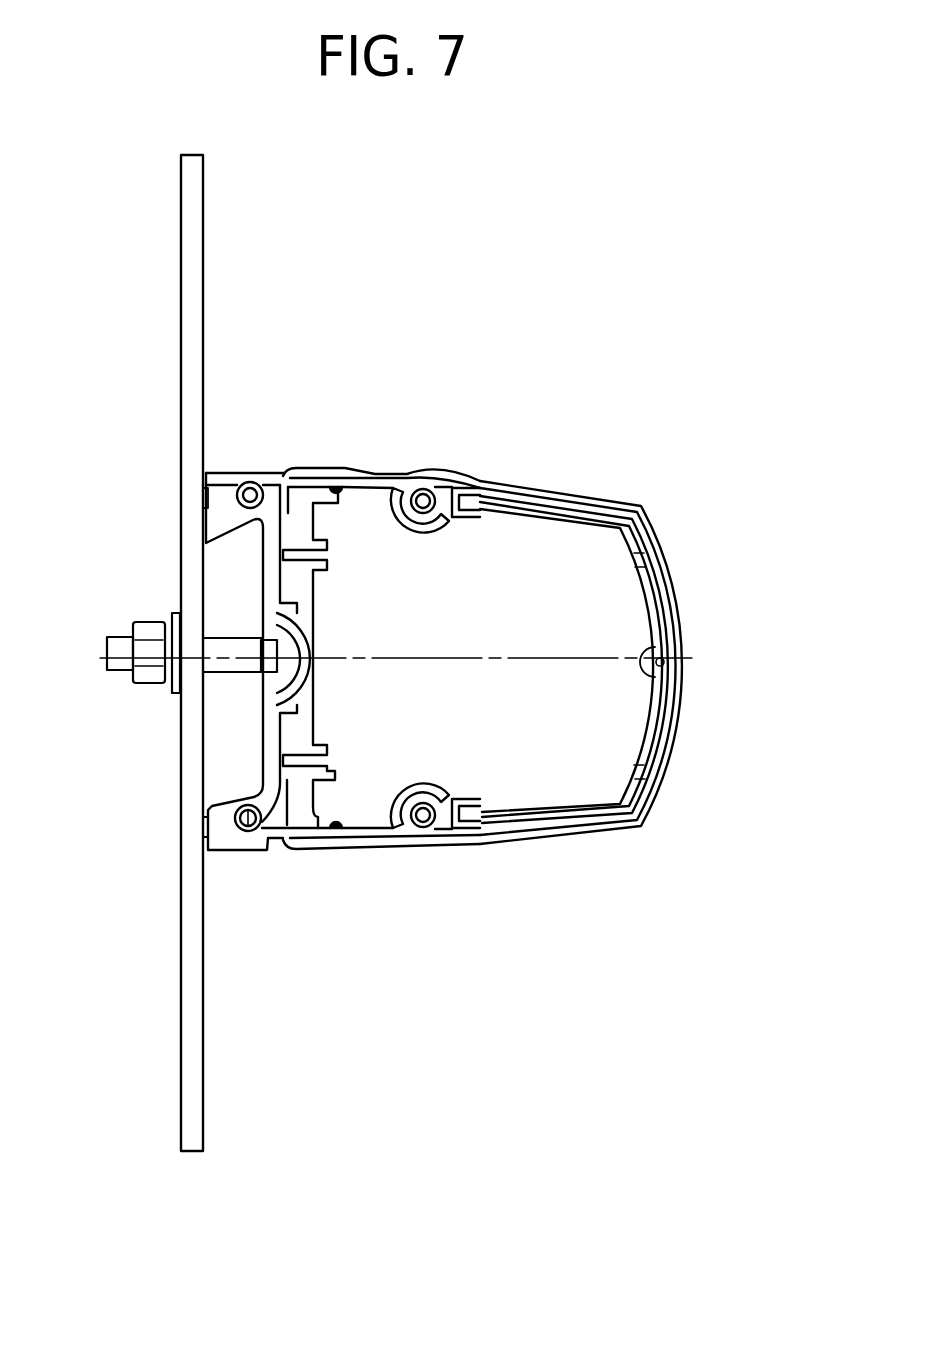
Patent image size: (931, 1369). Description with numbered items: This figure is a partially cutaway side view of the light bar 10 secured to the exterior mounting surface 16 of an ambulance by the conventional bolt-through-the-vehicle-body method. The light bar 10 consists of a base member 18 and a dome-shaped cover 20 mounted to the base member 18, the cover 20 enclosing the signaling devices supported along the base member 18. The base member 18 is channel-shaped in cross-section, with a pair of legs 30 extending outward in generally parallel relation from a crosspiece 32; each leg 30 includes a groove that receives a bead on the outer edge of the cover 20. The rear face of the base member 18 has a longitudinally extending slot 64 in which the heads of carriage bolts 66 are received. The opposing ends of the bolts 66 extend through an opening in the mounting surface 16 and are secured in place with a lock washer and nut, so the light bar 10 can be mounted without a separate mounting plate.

The light bar 10 is at (700, 631).
The exterior mounting surface 16 is at (212, 270).
The base member 18 is at (290, 445).
The cover 20 is at (643, 507).
The legs 30 is at (378, 481).
The crosspiece 32 is at (297, 725).
The longitudinally extending slot 64 is at (293, 623).
The carriage bolts 66 is at (233, 657).